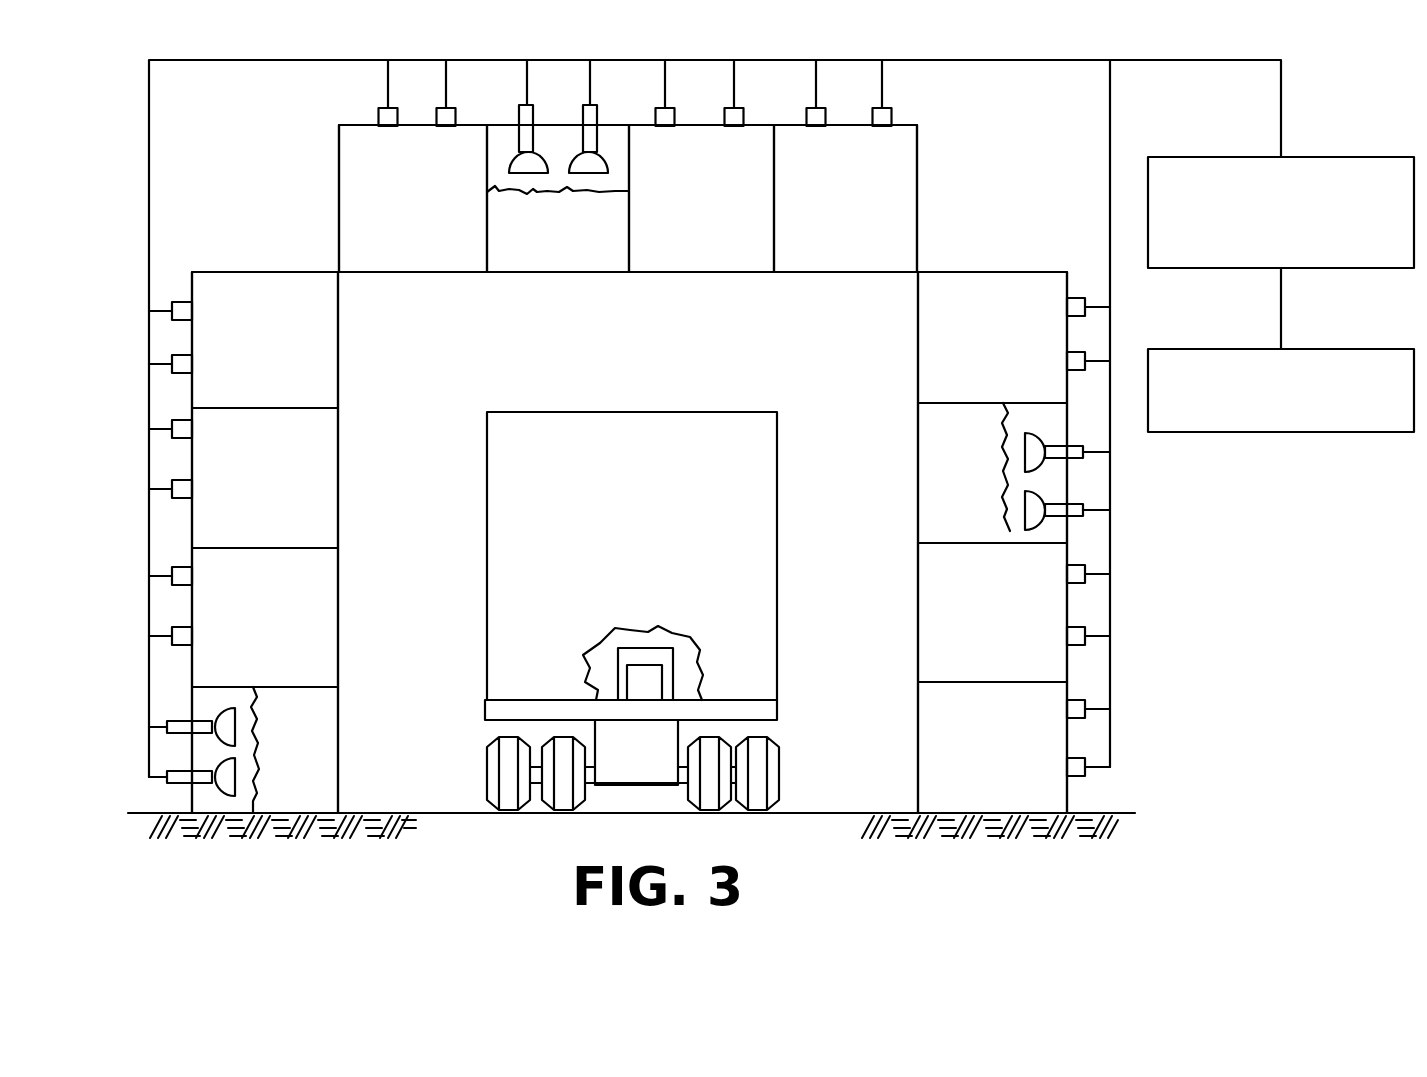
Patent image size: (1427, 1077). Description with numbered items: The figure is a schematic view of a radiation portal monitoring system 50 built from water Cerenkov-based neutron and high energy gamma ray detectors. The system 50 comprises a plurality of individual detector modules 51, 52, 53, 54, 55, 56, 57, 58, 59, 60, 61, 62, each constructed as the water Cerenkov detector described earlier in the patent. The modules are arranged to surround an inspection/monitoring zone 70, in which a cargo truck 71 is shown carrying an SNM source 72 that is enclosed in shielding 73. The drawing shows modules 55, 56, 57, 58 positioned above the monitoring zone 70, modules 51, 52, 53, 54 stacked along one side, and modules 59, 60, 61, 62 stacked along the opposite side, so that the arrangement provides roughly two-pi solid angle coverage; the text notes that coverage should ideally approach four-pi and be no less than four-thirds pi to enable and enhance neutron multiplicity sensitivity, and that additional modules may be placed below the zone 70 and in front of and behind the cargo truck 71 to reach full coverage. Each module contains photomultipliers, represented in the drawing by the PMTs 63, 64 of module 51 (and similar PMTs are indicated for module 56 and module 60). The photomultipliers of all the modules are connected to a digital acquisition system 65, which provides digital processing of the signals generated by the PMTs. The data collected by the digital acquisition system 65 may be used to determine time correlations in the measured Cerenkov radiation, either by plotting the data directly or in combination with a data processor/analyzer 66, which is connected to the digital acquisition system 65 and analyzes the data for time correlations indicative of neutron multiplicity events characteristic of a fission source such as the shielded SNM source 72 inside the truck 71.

The radiation portal monitoring system 50 is at (1306, 88).
The detector module 51 is at (322, 769).
The detector module 52 is at (298, 636).
The detector module 53 is at (297, 497).
The detector module 54 is at (297, 361).
The detector module 55 is at (447, 215).
The detector module 56 is at (594, 253).
The detector module 57 is at (737, 216).
The detector module 58 is at (880, 215).
The detector module 59 is at (1018, 360).
The detector module 60 is at (983, 498).
The detector module 61 is at (1013, 637).
The detector module 62 is at (1015, 768).
The photomultiplier tube 63 is at (172, 770).
The photomultiplier tube 64 is at (172, 720).
The digital acquisition system 65 is at (1223, 156).
The data processor/analyzer 66 is at (1276, 433).
The inspection/monitoring zone 70 is at (678, 354).
The cargo truck 71 is at (655, 505).
The SNM source 72 is at (650, 688).
The shielding 73 is at (642, 628).